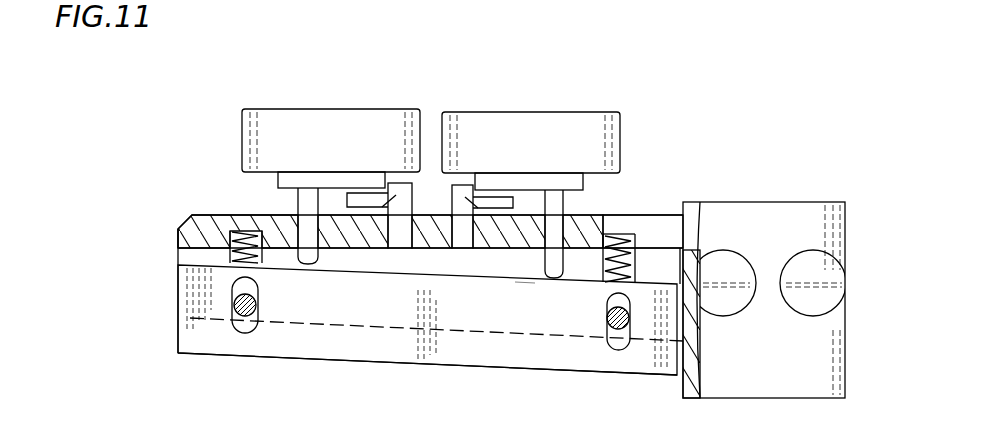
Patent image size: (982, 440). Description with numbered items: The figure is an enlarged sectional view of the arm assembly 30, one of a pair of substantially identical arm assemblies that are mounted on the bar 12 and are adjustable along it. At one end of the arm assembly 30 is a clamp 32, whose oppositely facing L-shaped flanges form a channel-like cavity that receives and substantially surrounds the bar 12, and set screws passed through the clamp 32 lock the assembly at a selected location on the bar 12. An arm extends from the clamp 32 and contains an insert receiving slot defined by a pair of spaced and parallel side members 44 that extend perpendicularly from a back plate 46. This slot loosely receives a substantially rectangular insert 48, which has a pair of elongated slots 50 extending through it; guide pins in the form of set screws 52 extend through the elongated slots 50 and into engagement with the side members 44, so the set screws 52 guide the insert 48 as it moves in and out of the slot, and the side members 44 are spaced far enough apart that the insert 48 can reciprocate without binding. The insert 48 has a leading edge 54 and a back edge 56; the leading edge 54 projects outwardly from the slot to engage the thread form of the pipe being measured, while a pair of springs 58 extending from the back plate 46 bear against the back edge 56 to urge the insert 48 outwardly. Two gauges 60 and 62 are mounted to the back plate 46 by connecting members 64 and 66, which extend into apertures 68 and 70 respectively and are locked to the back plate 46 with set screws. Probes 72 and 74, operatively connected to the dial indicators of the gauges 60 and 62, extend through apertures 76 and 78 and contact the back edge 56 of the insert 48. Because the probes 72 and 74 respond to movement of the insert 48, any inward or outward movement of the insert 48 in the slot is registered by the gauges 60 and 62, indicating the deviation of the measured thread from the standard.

The bar 12 is at (273, 224).
The arm assembly 30 is at (176, 133).
The clamp 32 is at (790, 192).
The side members 44 is at (187, 255).
The back plate 46 is at (662, 223).
The insert 48 is at (322, 348).
The elongated slots 50 is at (235, 327).
The set screws 52 is at (232, 306).
The leading edge 54 is at (430, 363).
The back edge 56 is at (523, 272).
The springs 58 is at (228, 232).
The gauge 60 is at (345, 108).
The gauge 62 is at (544, 112).
The connecting member 64 is at (410, 195).
The connecting member 66 is at (463, 196).
The aperture 68 is at (397, 250).
The aperture 70 is at (460, 250).
The probe 72 is at (303, 202).
The probe 74 is at (560, 207).
The aperture 76 is at (318, 250).
The aperture 78 is at (557, 252).